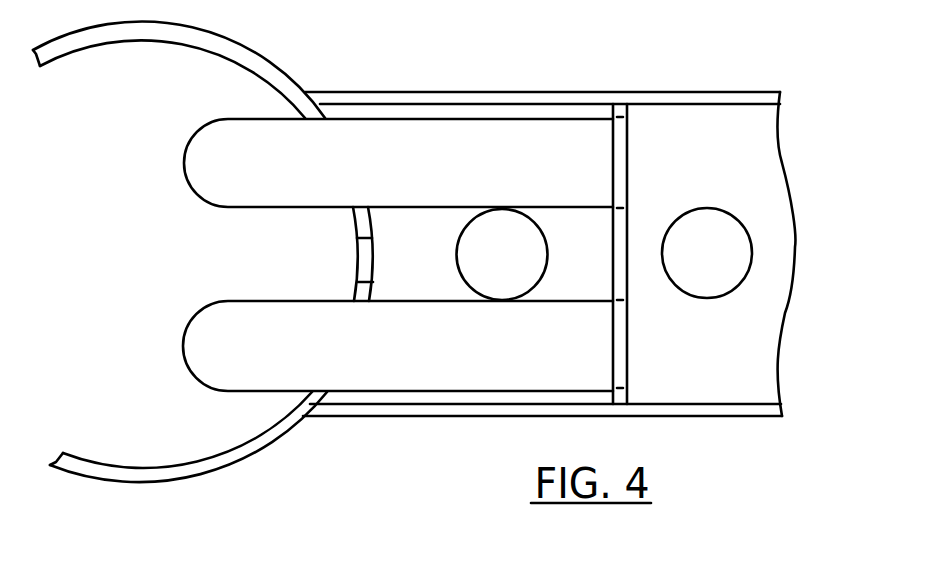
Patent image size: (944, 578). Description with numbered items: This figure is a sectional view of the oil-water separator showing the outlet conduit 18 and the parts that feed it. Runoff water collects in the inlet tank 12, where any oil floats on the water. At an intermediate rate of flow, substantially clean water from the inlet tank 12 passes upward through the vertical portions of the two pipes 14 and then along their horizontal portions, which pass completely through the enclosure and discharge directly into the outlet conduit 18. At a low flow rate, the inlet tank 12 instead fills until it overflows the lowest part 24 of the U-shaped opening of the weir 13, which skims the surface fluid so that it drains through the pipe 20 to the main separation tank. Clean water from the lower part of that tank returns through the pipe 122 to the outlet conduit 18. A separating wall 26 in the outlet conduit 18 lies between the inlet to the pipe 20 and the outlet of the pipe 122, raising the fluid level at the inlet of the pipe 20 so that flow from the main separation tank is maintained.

The inlet tank 12 is at (208, 40).
The weir 13 is at (374, 233).
The pipes 14 is at (233, 205).
The outlet conduit 18 is at (457, 92).
The pipe 20 is at (520, 266).
The lowest part of the U-shaped opening 24 is at (362, 259).
The wall 26 is at (620, 287).
The pipe 122 is at (683, 267).